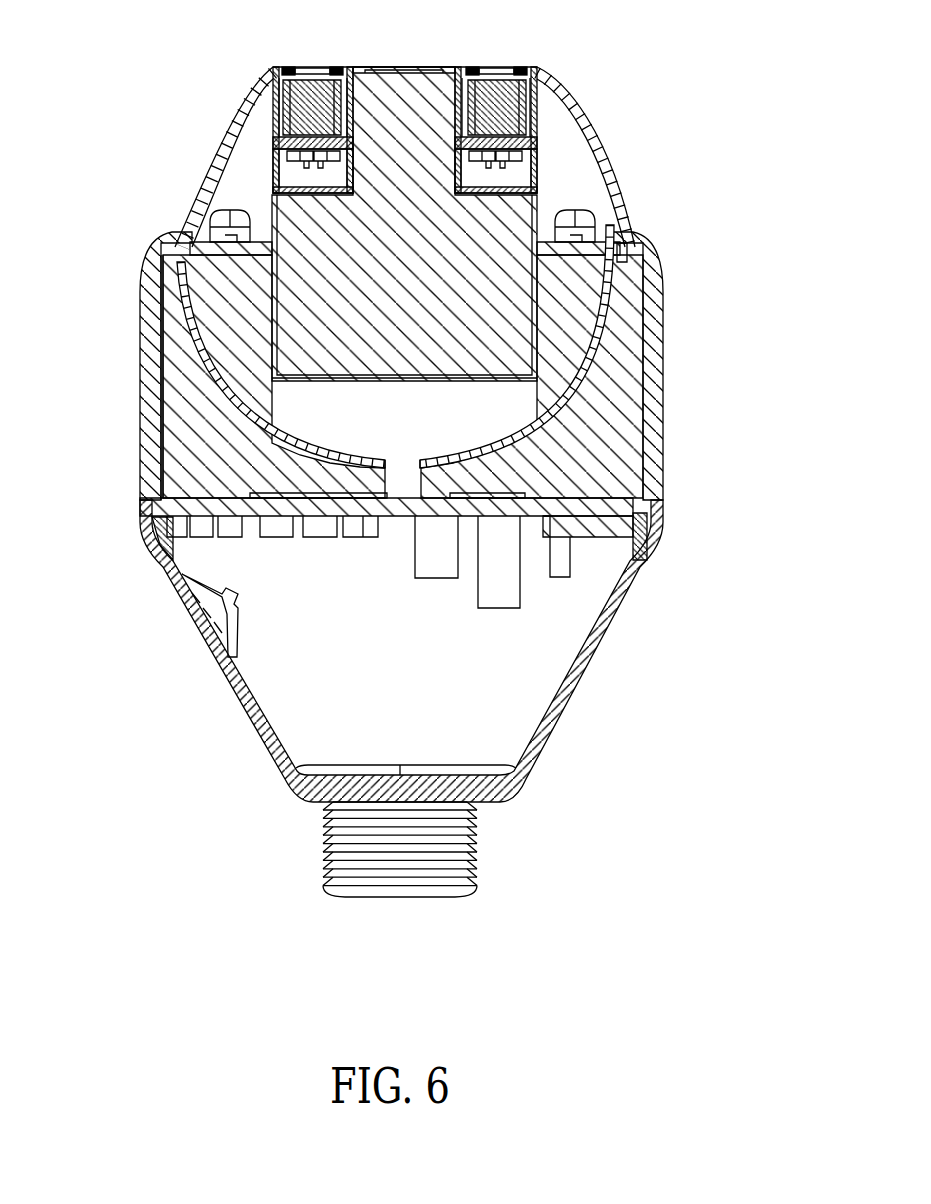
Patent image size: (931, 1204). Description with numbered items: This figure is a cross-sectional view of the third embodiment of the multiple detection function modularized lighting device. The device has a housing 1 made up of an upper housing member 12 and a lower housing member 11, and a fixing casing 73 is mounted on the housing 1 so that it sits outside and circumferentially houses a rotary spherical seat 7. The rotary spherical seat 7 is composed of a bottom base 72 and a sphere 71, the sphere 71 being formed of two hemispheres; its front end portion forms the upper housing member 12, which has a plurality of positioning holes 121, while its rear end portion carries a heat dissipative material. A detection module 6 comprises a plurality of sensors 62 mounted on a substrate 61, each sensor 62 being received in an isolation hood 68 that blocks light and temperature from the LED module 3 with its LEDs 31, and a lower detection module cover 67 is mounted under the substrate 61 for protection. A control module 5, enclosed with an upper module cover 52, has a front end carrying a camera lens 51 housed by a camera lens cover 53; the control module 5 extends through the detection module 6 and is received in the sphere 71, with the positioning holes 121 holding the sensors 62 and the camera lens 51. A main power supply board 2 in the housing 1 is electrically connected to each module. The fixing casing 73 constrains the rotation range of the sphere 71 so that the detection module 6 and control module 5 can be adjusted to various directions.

The housing 1 is at (629, 621).
The lower housing member 11 is at (543, 743).
The upper housing member 12 is at (263, 83).
The positioning holes 121 is at (406, 60).
The main power supply board 2 is at (615, 538).
The LED module 3 is at (221, 265).
The LEDs 31 is at (596, 233).
The control module 5 is at (532, 217).
The camera lens 51 is at (420, 67).
The upper module cover 52 is at (537, 192).
The camera lens cover 53 is at (353, 63).
The detection module 6 is at (548, 135).
The substrate 61 is at (273, 137).
The sensors 62 is at (530, 72).
The lower detection module cover 67 is at (270, 167).
The isolation hoods 68 is at (280, 67).
The rotary spherical seat 7 is at (158, 401).
The sphere 71 is at (640, 307).
The bottom base 72 is at (163, 470).
The fixing casing 73 is at (140, 257).